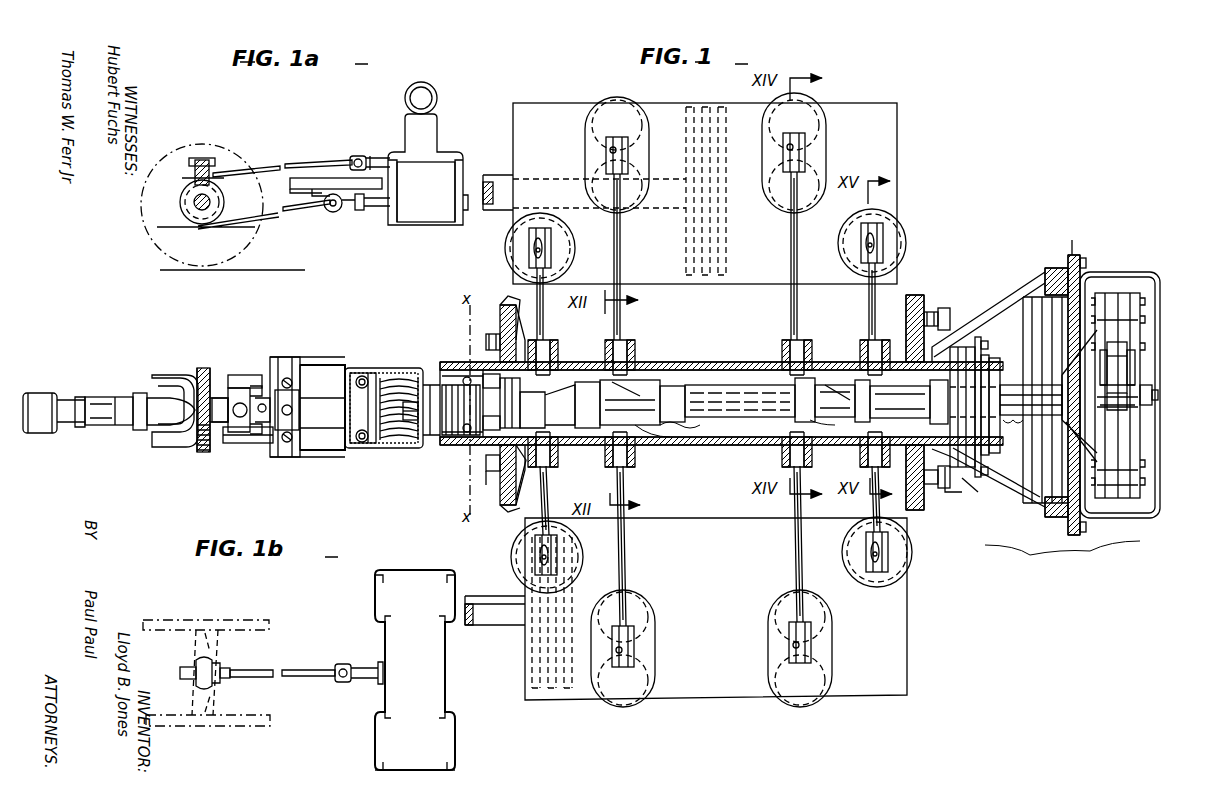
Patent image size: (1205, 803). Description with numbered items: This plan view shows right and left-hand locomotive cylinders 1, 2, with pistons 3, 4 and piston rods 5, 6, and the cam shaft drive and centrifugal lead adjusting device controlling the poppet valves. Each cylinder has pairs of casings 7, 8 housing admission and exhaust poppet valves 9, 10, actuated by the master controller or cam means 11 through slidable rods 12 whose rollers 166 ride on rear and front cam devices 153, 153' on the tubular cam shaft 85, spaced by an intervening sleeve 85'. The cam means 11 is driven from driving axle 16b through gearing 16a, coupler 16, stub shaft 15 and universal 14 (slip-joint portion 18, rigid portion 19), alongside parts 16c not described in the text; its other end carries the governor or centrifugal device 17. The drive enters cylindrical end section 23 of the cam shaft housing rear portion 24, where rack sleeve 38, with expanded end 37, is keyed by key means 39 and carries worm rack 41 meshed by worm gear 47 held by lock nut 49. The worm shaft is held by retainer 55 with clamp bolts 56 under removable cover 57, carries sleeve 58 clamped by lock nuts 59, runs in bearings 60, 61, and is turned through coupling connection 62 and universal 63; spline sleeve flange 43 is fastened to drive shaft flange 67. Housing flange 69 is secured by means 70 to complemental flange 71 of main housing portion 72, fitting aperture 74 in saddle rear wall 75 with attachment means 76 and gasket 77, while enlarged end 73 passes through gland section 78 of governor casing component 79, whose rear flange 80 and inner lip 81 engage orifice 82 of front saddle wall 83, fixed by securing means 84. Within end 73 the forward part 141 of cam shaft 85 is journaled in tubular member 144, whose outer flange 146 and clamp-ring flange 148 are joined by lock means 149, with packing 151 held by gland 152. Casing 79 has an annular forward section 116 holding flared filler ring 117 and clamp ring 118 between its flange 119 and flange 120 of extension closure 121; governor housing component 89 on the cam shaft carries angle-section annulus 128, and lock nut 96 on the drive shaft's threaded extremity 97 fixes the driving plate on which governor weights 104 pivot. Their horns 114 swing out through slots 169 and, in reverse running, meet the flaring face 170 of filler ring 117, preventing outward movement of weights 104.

In FIG. 1a, the right-hand cylinder 1 is at (428, 153).
In FIG. 1b, the right-hand cylinder 1 is at (415, 741).
In FIG. 1, the right-hand cylinder 1 is at (716, 609).
In FIG. 1b, the left-hand cylinder 2 is at (415, 670).
In FIG. 1, the left-hand cylinder 2 is at (705, 193).
In FIG. 1, the piston 3 is at (530, 665).
In FIG. 1, the piston 4 is at (726, 220).
In FIG. 1a, the piston rod 5 is at (367, 208).
In FIG. 1, the piston rod 5 is at (509, 618).
In FIG. 1, the piston rod 6 is at (509, 186).
In FIG. 1, the casing 7 is at (585, 160).
In FIG. 1, the casing 8 is at (506, 237).
In FIG. 1, the admission poppet valve 9 is at (590, 128).
In FIG. 1, the exhaust poppet valve 10 is at (508, 262).
In FIG. 1, the master controller or cam means 11 is at (770, 372).
In FIG. 1, the longitudinally slidable rod 12 is at (620, 252).
In FIG. 1a, the universal 14 is at (357, 155).
In FIG. 1b, the universal 14 is at (344, 664).
In FIG. 1, the universal 14 is at (204, 358).
In FIG. 1, the stub shaft 15 is at (72, 424).
In FIG. 1a, the coupler 16 is at (294, 163).
In FIG. 1b, the coupler 16 is at (299, 690).
In FIG. 1, the coupler 16 is at (40, 393).
In FIG. 1a, the gearing 16a is at (176, 176).
In FIG. 1b, the gearing 16a is at (174, 660).
In FIG. 1a, the driving axle 16b is at (225, 196).
In FIG. 1b, the driving axle 16b is at (218, 646).
In FIG. 1b, the cross bars 16c is at (210, 615).
In FIG. 1, the governor or centrifugal device 17 is at (1062, 549).
In FIG. 1, the slip-joint portion 18 is at (105, 397).
In FIG. 1, the rigid portion 19 is at (204, 454).
In FIG. 1, the cylindrical end section 23 is at (250, 443).
In FIG. 1a, the cam shaft housing rear portion 24 is at (376, 155).
In FIG. 1b, the cam shaft housing rear portion 24 is at (366, 680).
In FIG. 1, the cam shaft housing rear portion 24 is at (310, 357).
In FIG. 1, the expanded end 37 is at (470, 458).
In FIG. 1, the rack sleeve 38 is at (452, 452).
In FIG. 1, the key means 39 is at (436, 361).
In FIG. 1, the worm rack 41 is at (455, 364).
In FIG. 1, the flange 43 is at (512, 386).
In FIG. 1, the worm gear 47 is at (394, 378).
In FIG. 1, the lock nut 49 is at (412, 420).
In FIG. 1, the common retainer 55 is at (366, 373).
In FIG. 1, the clamp bolt 56 is at (356, 378).
In FIG. 1, the removable cover 57 is at (384, 368).
In FIG. 1, the sleeve 58 is at (320, 394).
In FIG. 1, the lock nut 59 is at (274, 430).
In FIG. 1, the bearing 60 is at (302, 457).
In FIG. 1, the bearing 61 is at (342, 440).
In FIG. 1, the coupling connection 62 is at (212, 392).
In FIG. 1, the universal 63 is at (252, 385).
In FIG. 1, the flange 67 is at (520, 408).
In FIG. 1, the flange 69 is at (504, 304).
In FIG. 1, the securing means 70 is at (494, 350).
In FIG. 1, the complemental flange 71 is at (516, 338).
In FIG. 1, the main housing portion 72 is at (718, 444).
In FIG. 1, the enlarged end 73 is at (950, 474).
In FIG. 1, the aperture 74 is at (523, 475).
In FIG. 1, the cylinder saddle rear wall 75 is at (508, 508).
In FIG. 1, the attachment means 76 is at (494, 462).
In FIG. 1, the sealing gasket 77 is at (490, 480).
In FIG. 1, the gland section 78 is at (952, 345).
In FIG. 1, the casing component 79 is at (1000, 300).
In FIG. 1, the rear flange 80 is at (942, 308).
In FIG. 1, the inner lip 81 is at (906, 316).
In FIG. 1, the orifice 82 is at (906, 470).
In FIG. 1, the front cylinder saddle wall 83 is at (926, 310).
In FIG. 1, the securing means 84 is at (952, 312).
In FIG. 1, the tubular cam shaft 85 is at (1013, 433).
In FIG. 1, the intervening sleeve 85' is at (734, 406).
In FIG. 1, the governor housing component 89 is at (1106, 292).
In FIG. 1, the lock nut 96 is at (1158, 398).
In FIG. 1, the screw-threaded extremity 97 is at (1153, 390).
In FIG. 1, the governor weight 104 is at (1114, 342).
In FIG. 1, the horn 114 is at (1135, 352).
In FIG. 1, the annular forward section 116 is at (1048, 270).
In FIG. 1, the flared filler ring 117 is at (1062, 286).
In FIG. 1, the clamp ring 118 is at (1070, 238).
In FIG. 1, the flange 119 is at (1068, 253).
In FIG. 1, the flange 120 is at (1083, 258).
In FIG. 1, the extension closure 121 is at (1128, 292).
In FIG. 1, the angle-section annulus 128 is at (1148, 274).
In FIG. 1, the forward part 141 is at (1031, 400).
In FIG. 1, the tubular member 144 is at (994, 380).
In FIG. 1, the outer flange 146 is at (988, 353).
In FIG. 1, the flange 148 is at (994, 365).
In FIG. 1, the lock means 149 is at (1000, 456).
In FIG. 1, the packing 151 is at (972, 480).
In FIG. 1, the gland 152 is at (978, 335).
In FIG. 1, the rear cam device 153 is at (660, 446).
In FIG. 1, the front cam device 153' is at (829, 443).
In FIG. 1, the roller 166 is at (560, 345).
In FIG. 1, the circumferential slot 169 is at (1135, 365).
In FIG. 1, the flaring face 170 is at (1058, 283).